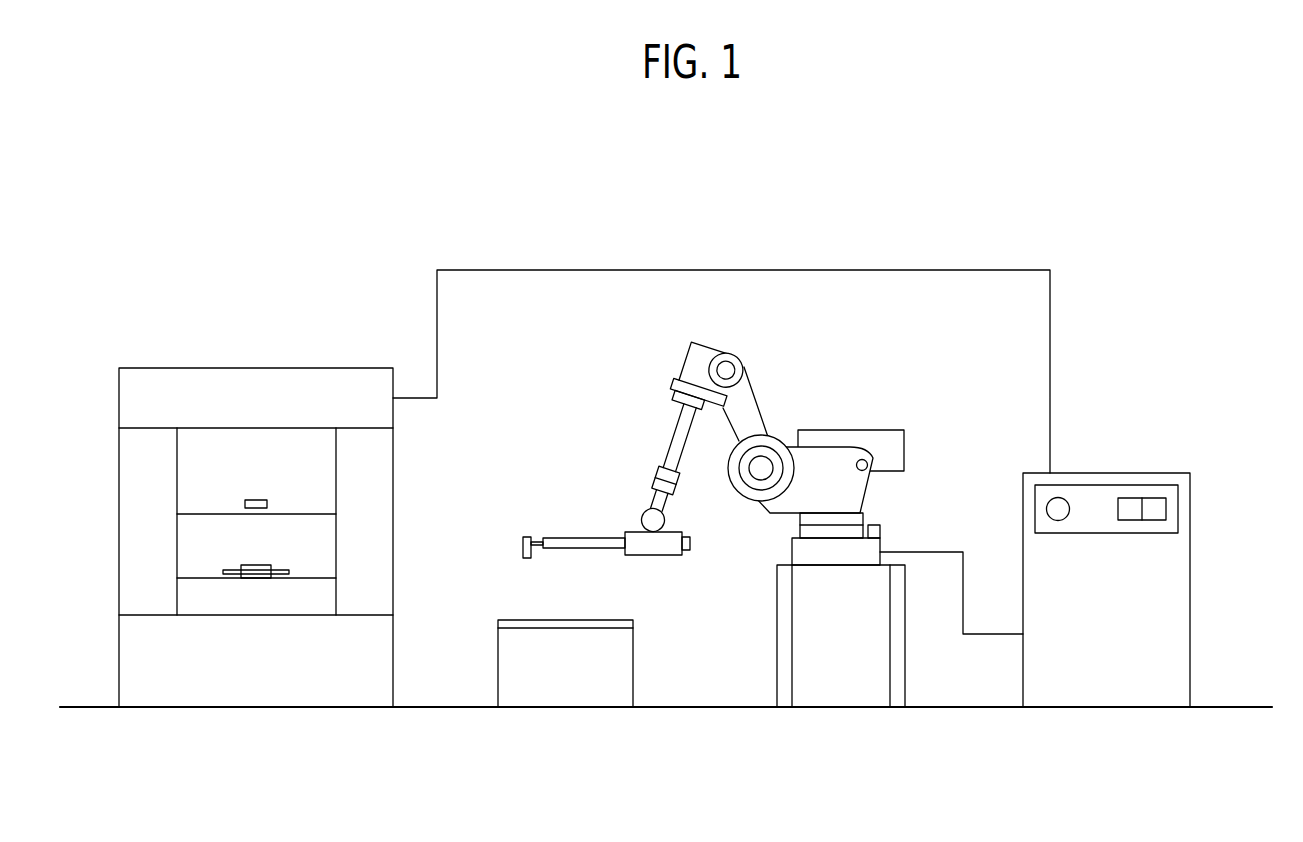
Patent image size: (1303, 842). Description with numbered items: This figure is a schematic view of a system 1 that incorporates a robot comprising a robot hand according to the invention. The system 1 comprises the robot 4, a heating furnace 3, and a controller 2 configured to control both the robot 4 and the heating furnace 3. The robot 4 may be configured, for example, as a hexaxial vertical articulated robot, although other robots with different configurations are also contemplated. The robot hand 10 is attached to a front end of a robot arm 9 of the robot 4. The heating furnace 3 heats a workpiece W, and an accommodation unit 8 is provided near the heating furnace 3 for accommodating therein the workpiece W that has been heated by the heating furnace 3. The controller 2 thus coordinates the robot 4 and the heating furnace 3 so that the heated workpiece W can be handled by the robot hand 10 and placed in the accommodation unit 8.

The system 1 is at (896, 215).
The controller 2 is at (1099, 473).
The heating furnace 3 is at (204, 367).
The robot 4 is at (762, 405).
The accommodation unit 8 is at (615, 663).
The robot arm 9 is at (663, 444).
The robot hand 10 is at (561, 508).
The workpiece W is at (318, 555).